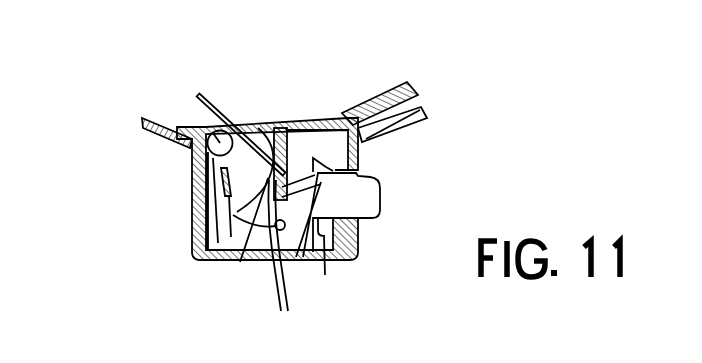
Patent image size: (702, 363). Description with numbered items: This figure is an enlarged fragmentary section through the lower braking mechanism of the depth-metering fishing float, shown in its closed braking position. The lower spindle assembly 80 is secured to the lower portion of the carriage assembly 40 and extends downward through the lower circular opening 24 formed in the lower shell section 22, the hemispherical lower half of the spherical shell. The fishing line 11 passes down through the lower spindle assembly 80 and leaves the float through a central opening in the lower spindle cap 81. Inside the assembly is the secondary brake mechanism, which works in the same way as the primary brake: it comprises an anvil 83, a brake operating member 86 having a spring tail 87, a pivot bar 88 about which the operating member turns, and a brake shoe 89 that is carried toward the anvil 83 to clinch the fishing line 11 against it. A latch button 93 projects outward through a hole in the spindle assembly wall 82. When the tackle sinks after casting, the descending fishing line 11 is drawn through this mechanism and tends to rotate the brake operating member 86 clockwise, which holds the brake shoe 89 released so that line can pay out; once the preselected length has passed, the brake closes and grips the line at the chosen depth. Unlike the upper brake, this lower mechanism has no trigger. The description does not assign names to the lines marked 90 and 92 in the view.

The fishing line 11 is at (288, 293).
The lower shell section 22 is at (143, 137).
The lower circular opening 24 is at (345, 142).
The carriage assembly 40 is at (376, 98).
The lower spindle assembly 80 is at (479, 185).
The lower spindle cap 81 is at (217, 262).
The spindle assembly wall 82 is at (362, 146).
The anvil 83 is at (280, 150).
The brake operating member 86 is at (192, 227).
The spring tail 87 is at (215, 176).
The pivot bar 88 is at (203, 127).
The brake shoe 89 is at (233, 215).
The lead wire 90 is at (240, 262).
The terminal pin 92 is at (325, 275).
The latch button 93 is at (387, 193).